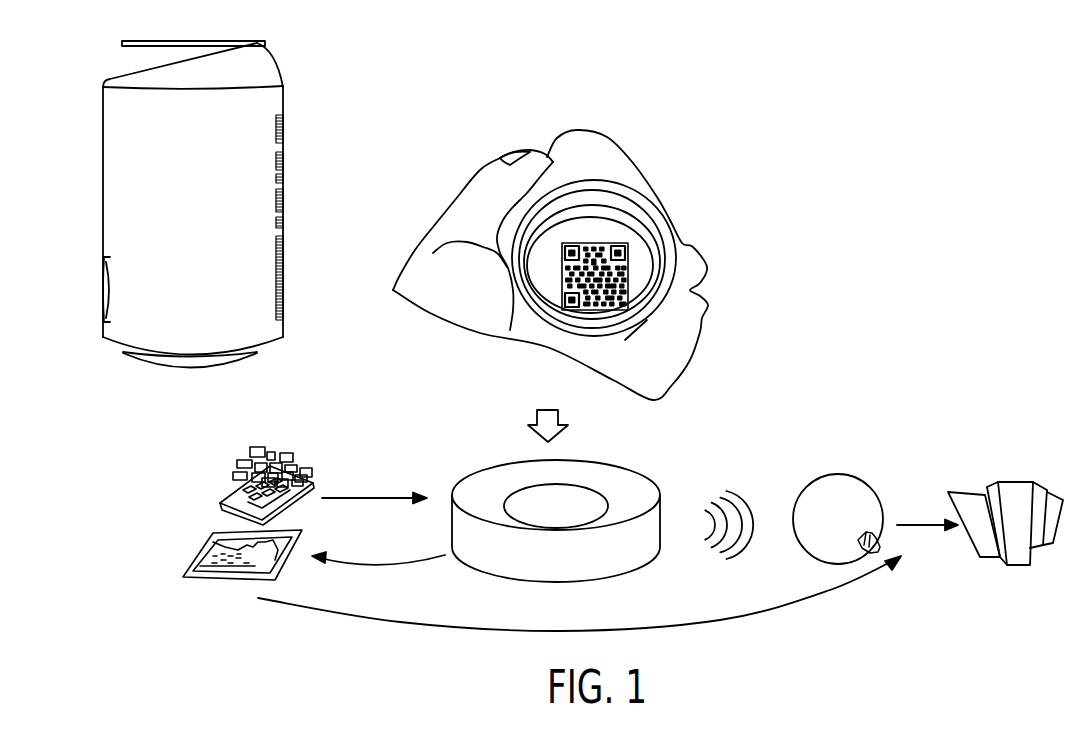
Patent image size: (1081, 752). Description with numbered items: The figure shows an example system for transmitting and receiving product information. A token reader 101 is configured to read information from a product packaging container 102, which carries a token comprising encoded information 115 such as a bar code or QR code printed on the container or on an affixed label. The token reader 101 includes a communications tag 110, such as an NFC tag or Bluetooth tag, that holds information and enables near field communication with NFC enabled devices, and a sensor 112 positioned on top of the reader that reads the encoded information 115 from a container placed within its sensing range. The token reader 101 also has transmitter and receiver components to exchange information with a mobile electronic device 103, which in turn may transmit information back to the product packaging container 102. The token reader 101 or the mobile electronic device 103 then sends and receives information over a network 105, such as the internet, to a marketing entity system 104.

The token reader 101 is at (576, 518).
The product packaging container 102 is at (553, 162).
The mobile electronic device 103 is at (203, 550).
The marketing entity system 104 is at (1043, 490).
The network 105 is at (845, 473).
The communications tag 110 is at (576, 483).
The sensor 112 is at (567, 492).
The encoded information 115 is at (643, 275).